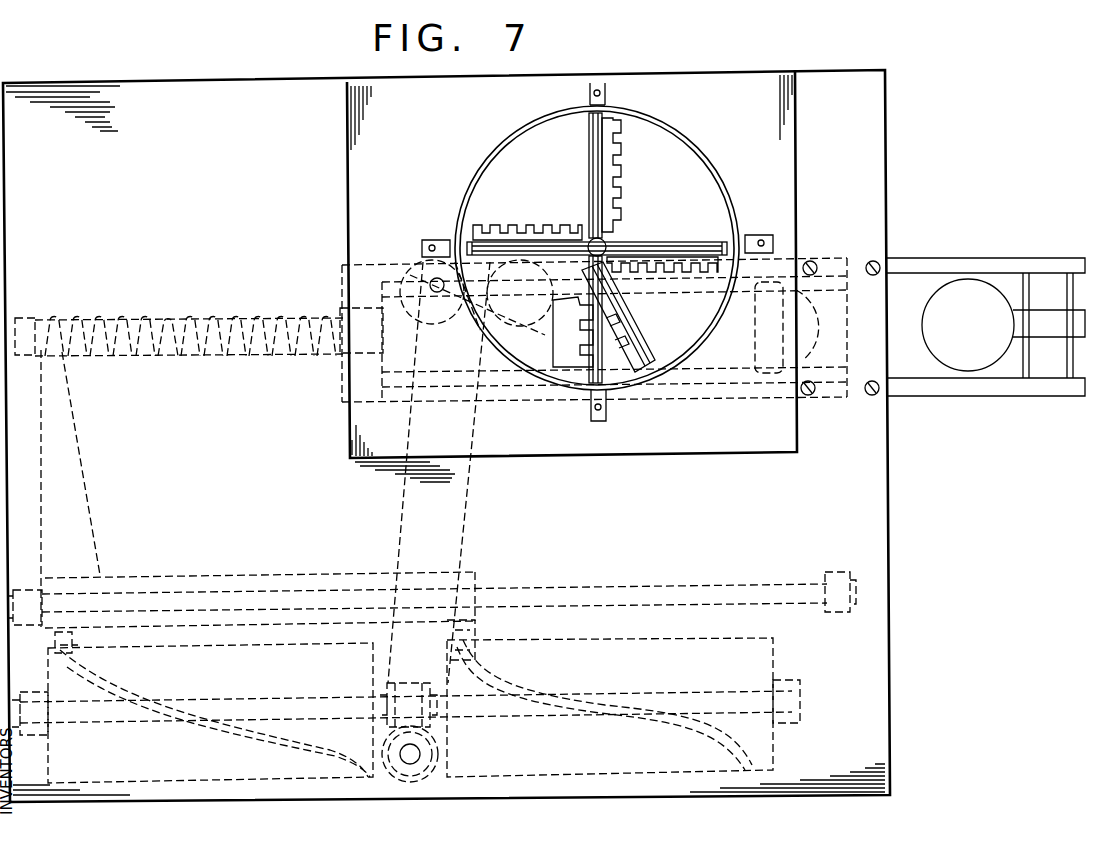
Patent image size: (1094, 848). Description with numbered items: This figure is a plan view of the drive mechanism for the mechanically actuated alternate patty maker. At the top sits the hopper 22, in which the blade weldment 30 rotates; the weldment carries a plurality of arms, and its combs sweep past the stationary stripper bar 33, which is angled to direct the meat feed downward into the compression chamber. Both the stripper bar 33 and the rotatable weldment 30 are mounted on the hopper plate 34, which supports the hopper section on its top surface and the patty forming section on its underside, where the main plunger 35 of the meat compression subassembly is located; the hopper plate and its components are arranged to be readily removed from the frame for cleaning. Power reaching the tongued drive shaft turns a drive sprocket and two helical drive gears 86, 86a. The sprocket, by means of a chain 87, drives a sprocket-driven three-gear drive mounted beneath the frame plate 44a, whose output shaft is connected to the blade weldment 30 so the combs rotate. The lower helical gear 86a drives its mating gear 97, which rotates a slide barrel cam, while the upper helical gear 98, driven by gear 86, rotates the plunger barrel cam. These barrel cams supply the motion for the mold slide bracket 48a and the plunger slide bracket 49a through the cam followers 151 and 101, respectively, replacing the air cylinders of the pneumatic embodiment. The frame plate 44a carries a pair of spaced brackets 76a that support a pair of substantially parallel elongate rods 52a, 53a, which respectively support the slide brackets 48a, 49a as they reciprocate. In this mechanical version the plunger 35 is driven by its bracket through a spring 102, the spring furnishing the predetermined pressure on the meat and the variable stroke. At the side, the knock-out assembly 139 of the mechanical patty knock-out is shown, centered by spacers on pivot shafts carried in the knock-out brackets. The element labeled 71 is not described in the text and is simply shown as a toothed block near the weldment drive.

The hopper 22 is at (666, 122).
The blade weldment 30 is at (668, 240).
The stationary stripper bar 33 is at (640, 336).
The hopper plate 34 is at (565, 442).
The main plunger 35 is at (388, 307).
The frame plate 44a is at (890, 520).
The mold slide bracket 48a is at (70, 474).
The plunger slide bracket 49a is at (258, 489).
The elongate rod 52a is at (740, 590).
The elongate rod 53a is at (434, 580).
The toothed block 71 is at (558, 346).
The spaced brackets 76a is at (32, 590).
The helical drive gear 86 is at (440, 760).
The helical drive gear 86a is at (462, 754).
The chain 87 is at (445, 338).
The mating gear 97 is at (397, 686).
The upper helical gear 98 is at (406, 708).
The cam follower 101 is at (78, 640).
The spring 102 is at (186, 360).
The knock-out assembly 139 is at (973, 391).
The cam follower 151 is at (467, 633).